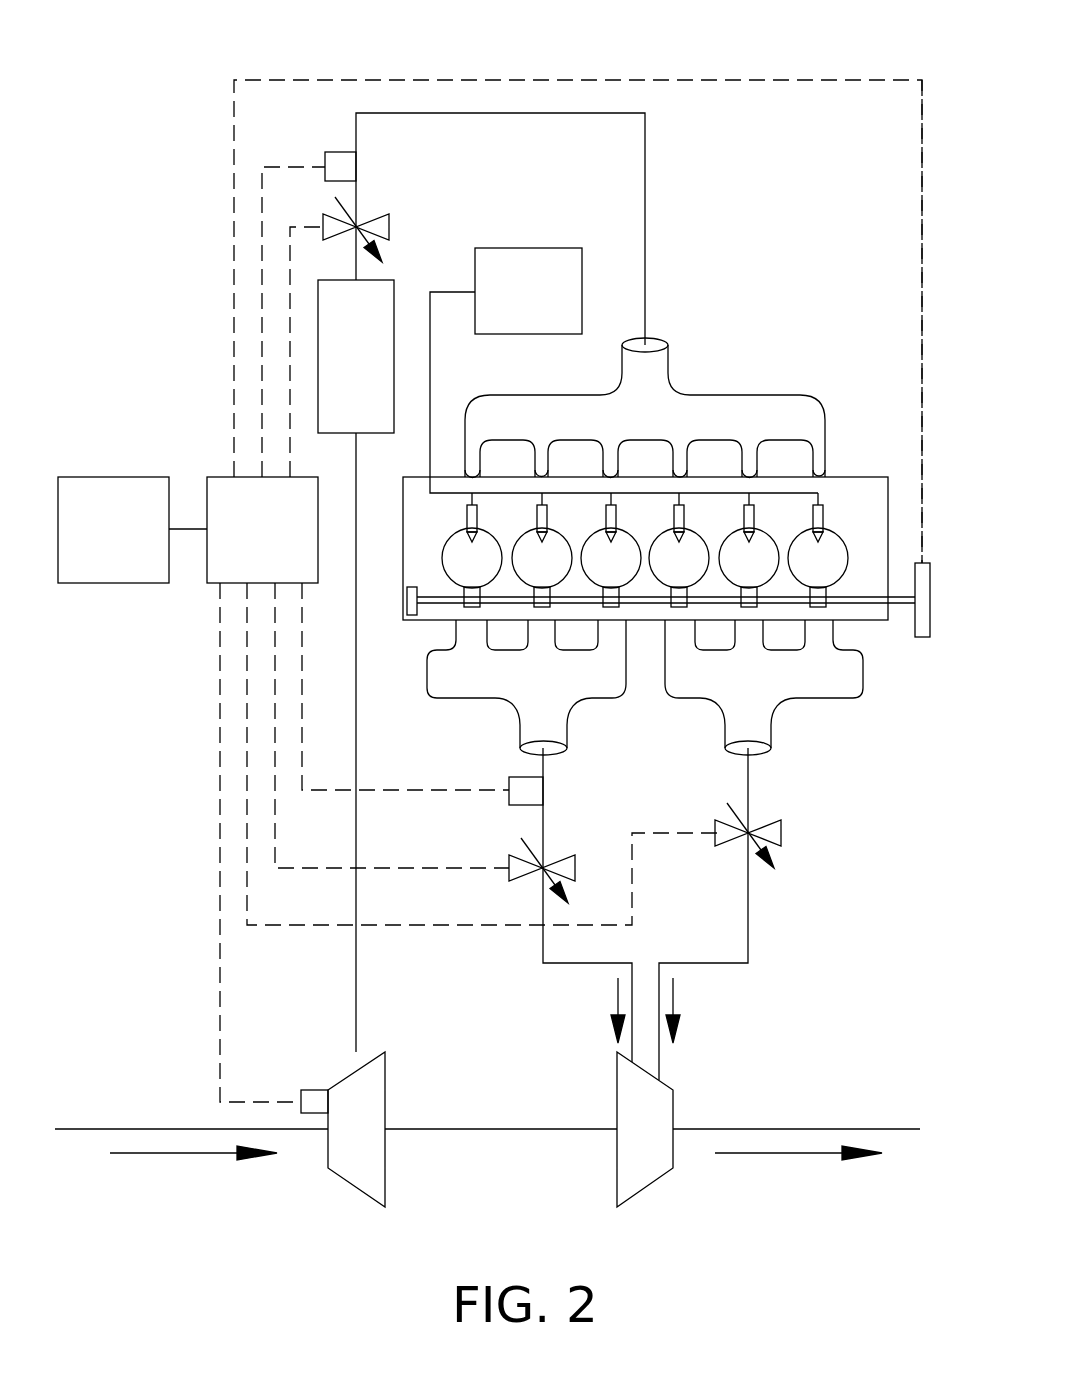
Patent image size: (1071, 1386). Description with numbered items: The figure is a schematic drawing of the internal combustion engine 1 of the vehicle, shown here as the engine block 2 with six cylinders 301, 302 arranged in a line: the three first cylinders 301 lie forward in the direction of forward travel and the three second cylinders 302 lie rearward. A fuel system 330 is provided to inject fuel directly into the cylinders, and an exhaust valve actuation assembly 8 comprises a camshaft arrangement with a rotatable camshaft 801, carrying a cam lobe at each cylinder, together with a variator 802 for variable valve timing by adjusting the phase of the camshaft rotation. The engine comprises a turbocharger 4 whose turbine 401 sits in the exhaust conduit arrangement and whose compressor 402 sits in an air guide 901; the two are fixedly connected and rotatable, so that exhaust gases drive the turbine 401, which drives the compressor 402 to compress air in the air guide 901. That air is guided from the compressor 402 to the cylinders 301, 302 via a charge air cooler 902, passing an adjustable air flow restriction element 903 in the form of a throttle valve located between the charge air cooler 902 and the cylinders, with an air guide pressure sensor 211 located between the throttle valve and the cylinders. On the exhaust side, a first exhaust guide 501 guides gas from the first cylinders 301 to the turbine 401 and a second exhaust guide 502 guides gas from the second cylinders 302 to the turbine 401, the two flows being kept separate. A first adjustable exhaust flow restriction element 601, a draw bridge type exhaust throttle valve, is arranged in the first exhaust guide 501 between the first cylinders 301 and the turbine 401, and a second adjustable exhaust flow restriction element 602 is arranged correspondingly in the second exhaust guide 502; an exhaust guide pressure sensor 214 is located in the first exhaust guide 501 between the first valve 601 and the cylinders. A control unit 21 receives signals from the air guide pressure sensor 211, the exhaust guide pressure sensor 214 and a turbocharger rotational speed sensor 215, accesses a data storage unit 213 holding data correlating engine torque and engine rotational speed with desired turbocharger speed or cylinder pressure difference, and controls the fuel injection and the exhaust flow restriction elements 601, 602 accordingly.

The engine 1 is at (178, 67).
The internal combustion engine 2 is at (857, 477).
The turbocharger 4 is at (487, 1141).
The exhaust valve actuation assembly 8 is at (691, 416).
The control unit 21 is at (246, 545).
The data storage unit 213 is at (89, 545).
The air guide pressure sensor 211 is at (327, 152).
The exhaust guide pressure sensor 214 is at (543, 789).
The turbocharger rotational speed sensor 215 is at (312, 1090).
The first cylinders 301 is at (541, 540).
The second cylinders 302 is at (748, 540).
The fuel system 330 is at (528, 248).
The turbine 401 is at (648, 1190).
The compressor 402 is at (352, 1192).
The first exhaust guide 501 is at (455, 699).
The second exhaust guide 502 is at (836, 700).
The first adjustable exhaust flow restriction element 601 is at (509, 868).
The second adjustable exhaust flow restriction element 602 is at (780, 833).
The camshaft 801 is at (898, 605).
The variator 802 is at (922, 640).
The air guide 901 is at (450, 113).
The charge air cooler 902 is at (318, 355).
The adjustable air flow restriction element 903 is at (388, 227).